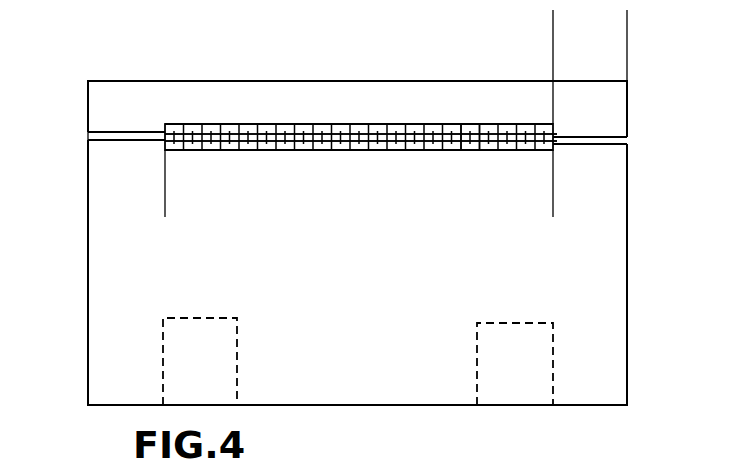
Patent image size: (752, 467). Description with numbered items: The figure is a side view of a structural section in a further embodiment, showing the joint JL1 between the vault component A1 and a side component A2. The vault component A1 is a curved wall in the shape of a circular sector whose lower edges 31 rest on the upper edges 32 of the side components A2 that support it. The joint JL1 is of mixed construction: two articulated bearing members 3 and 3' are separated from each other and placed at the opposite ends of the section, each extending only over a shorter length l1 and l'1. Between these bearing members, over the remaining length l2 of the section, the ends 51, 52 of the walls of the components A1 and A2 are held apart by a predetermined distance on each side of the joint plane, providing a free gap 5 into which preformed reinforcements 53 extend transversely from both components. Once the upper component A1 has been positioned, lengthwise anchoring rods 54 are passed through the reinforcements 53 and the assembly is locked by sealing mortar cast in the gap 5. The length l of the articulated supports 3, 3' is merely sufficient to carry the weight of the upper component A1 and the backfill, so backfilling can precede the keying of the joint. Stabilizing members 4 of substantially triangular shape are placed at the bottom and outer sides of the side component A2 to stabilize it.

The vault component A1 is at (191, 102).
The side component A2 is at (108, 266).
The articulated bearing member 3 is at (126, 90).
The articulated bearing member 3' is at (605, 114).
The lower edge 31 is at (590, 137).
The upper edge 32 is at (597, 144).
The free gap 5 is at (230, 126).
The wall end 51 is at (300, 125).
The wall end 52 is at (312, 152).
The preformed reinforcement 53 is at (407, 125).
The lengthwise anchoring rod 54 is at (478, 127).
The stabilizing member 4 is at (173, 360).
The joint JL1 is at (88, 133).
The length of articulated support l is at (590, 66).
The length of articulated bearing member l1 is at (165, 207).
The remaining length of section l2 is at (553, 207).
The length of articulated bearing member l'1 is at (590, 183).